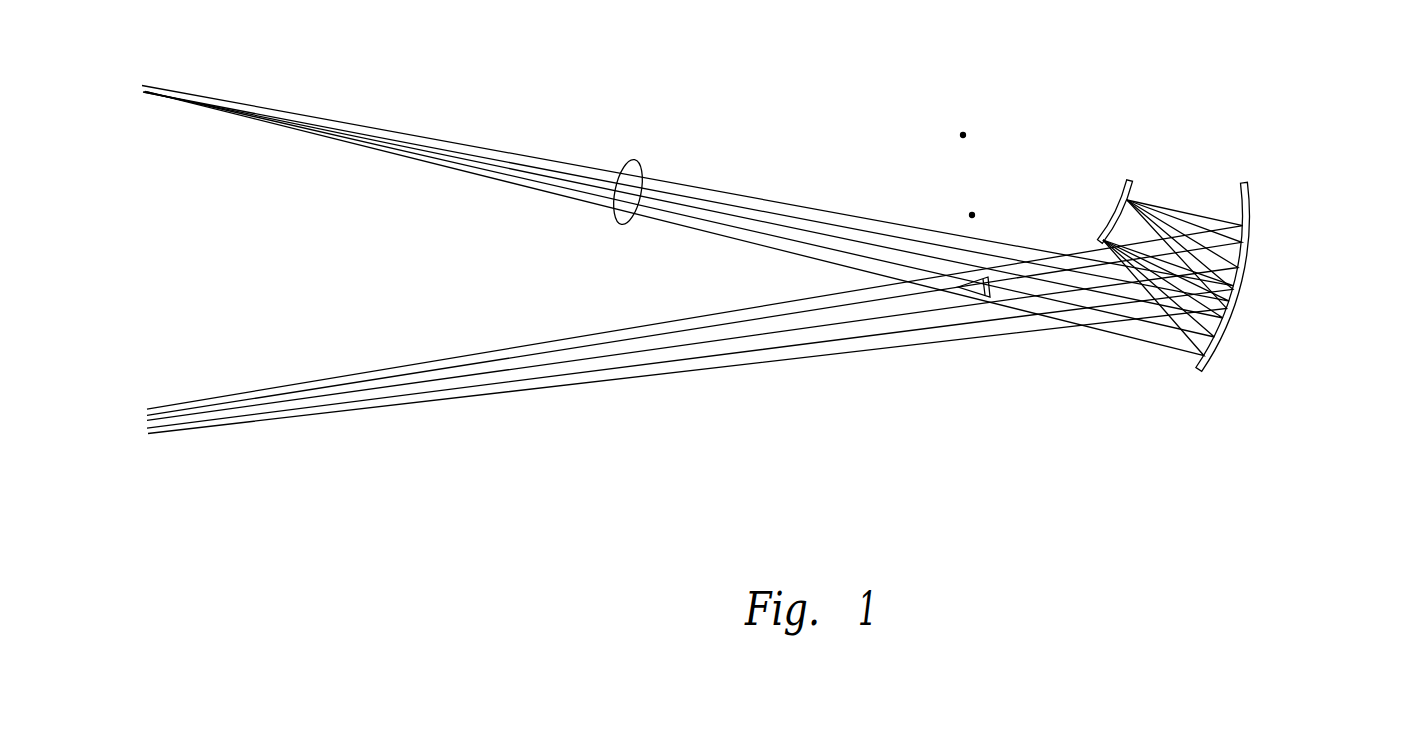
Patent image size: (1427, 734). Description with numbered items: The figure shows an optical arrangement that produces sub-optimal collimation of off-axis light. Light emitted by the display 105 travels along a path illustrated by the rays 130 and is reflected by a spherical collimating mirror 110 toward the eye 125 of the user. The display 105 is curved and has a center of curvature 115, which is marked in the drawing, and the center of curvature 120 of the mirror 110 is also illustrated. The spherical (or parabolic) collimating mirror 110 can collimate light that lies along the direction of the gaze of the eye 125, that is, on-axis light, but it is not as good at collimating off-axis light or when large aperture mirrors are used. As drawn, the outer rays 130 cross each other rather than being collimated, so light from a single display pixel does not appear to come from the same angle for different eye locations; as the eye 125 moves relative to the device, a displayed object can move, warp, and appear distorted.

The display 105 is at (1129, 181).
The spherical collimating mirror 110 is at (1245, 182).
The center of curvature of the display 115 is at (961, 132).
The center of curvature of the mirror 120 is at (971, 212).
The eye 125 is at (969, 291).
The rays 130 is at (634, 160).